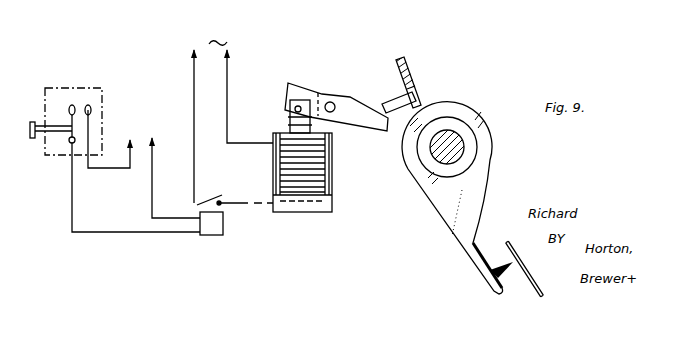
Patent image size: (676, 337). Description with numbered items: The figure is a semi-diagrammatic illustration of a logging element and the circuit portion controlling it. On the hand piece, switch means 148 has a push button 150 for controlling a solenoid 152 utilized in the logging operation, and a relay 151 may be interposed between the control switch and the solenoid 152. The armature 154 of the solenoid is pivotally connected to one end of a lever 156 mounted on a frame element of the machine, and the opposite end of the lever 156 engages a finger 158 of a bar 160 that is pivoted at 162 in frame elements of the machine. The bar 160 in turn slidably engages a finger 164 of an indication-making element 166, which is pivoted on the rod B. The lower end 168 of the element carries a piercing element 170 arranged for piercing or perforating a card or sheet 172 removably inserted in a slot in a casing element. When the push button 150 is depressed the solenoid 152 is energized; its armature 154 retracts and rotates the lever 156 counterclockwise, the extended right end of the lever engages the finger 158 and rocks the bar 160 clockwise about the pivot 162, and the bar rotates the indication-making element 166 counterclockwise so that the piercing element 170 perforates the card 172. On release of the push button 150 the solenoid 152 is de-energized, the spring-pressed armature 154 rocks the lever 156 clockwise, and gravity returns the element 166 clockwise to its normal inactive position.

The switch means 148 is at (60, 85).
The push button 150 is at (45, 152).
The relay 151 is at (210, 238).
The solenoid 152 is at (300, 200).
The armature 154 is at (290, 119).
The lever 156 is at (305, 92).
The finger 158 is at (385, 110).
The bar 160 is at (420, 100).
The pivot 162 is at (405, 60).
The finger 164 is at (425, 100).
The indication-making element 166 is at (430, 207).
The lower end 168 is at (472, 255).
The piercing element 170 is at (497, 266).
The card or sheet 172 is at (530, 283).
The rod B is at (457, 143).